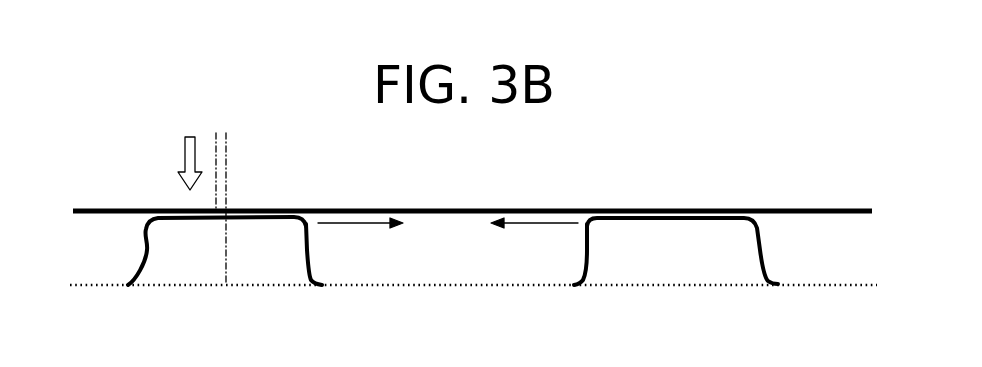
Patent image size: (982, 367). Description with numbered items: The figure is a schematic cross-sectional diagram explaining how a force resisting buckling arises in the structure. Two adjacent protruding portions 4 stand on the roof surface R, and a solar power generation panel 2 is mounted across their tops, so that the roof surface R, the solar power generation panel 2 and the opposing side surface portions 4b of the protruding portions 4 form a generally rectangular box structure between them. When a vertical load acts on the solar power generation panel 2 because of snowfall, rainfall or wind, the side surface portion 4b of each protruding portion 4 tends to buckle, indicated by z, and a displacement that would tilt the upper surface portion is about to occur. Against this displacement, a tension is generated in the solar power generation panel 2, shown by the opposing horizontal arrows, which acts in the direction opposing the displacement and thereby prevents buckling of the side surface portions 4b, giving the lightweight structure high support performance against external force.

The solar power generation panel 2 is at (122, 208).
The protruding portion 4 is at (148, 235).
The side surface portion 4b is at (308, 260).
The buckling z is at (136, 250).
The roof surface R is at (278, 288).